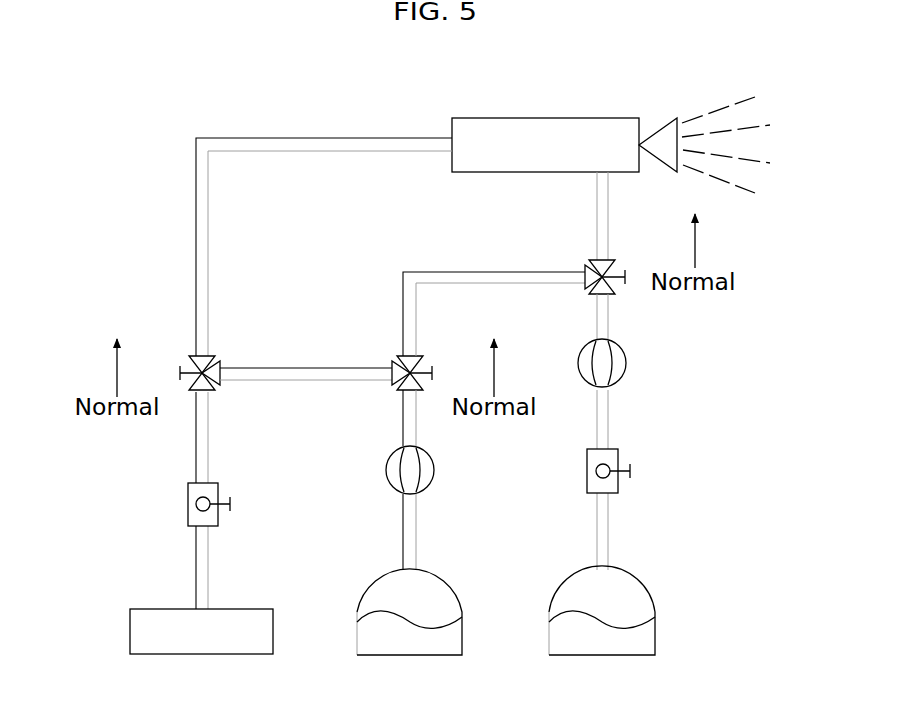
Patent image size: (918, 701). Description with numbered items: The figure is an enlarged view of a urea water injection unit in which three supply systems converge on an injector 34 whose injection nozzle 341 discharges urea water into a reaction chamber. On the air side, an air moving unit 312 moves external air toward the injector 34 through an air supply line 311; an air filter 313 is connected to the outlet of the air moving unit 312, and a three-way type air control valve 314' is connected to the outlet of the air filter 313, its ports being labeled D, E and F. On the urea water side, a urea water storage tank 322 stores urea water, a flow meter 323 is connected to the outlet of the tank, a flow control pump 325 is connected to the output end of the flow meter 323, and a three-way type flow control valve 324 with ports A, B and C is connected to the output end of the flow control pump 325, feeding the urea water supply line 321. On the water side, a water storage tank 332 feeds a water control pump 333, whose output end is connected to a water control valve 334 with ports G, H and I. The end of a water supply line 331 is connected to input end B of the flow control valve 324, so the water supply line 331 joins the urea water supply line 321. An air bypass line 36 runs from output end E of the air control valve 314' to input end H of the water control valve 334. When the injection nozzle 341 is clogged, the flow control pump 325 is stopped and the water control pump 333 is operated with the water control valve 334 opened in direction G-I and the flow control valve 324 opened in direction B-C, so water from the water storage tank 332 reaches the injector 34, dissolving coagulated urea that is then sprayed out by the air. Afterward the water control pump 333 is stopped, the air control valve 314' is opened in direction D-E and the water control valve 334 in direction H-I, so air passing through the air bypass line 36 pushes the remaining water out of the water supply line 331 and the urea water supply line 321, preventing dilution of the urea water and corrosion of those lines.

The injector 34 is at (493, 130).
The injection nozzle 341 is at (665, 133).
The air supply line 311 is at (203, 177).
The air moving unit 312 is at (130, 630).
The air filter 313 is at (187, 522).
The three-way type air control valve 314' is at (162, 410).
The air bypass line 36 is at (303, 367).
The water control valve 334 is at (424, 400).
The water supply line 331 is at (402, 308).
The water control pump 333 is at (390, 470).
The water storage tank 332 is at (368, 645).
The urea water supply line 321 is at (604, 203).
The three-way type flow control valve 324 is at (583, 247).
The flow control pump 325 is at (617, 362).
The flow meter 323 is at (587, 491).
The urea water storage tank 322 is at (563, 645).
The input end of flow control valve A is at (600, 283).
The input end of flow control valve B is at (583, 277).
The output end of flow control valve C is at (615, 262).
The input end of air control valve D is at (212, 392).
The output end of air control valve E is at (230, 370).
The output end of air control valve F is at (190, 358).
The input end of water control valve G is at (398, 390).
The input end of water control valve H is at (388, 372).
The output end of water control valve I is at (415, 362).